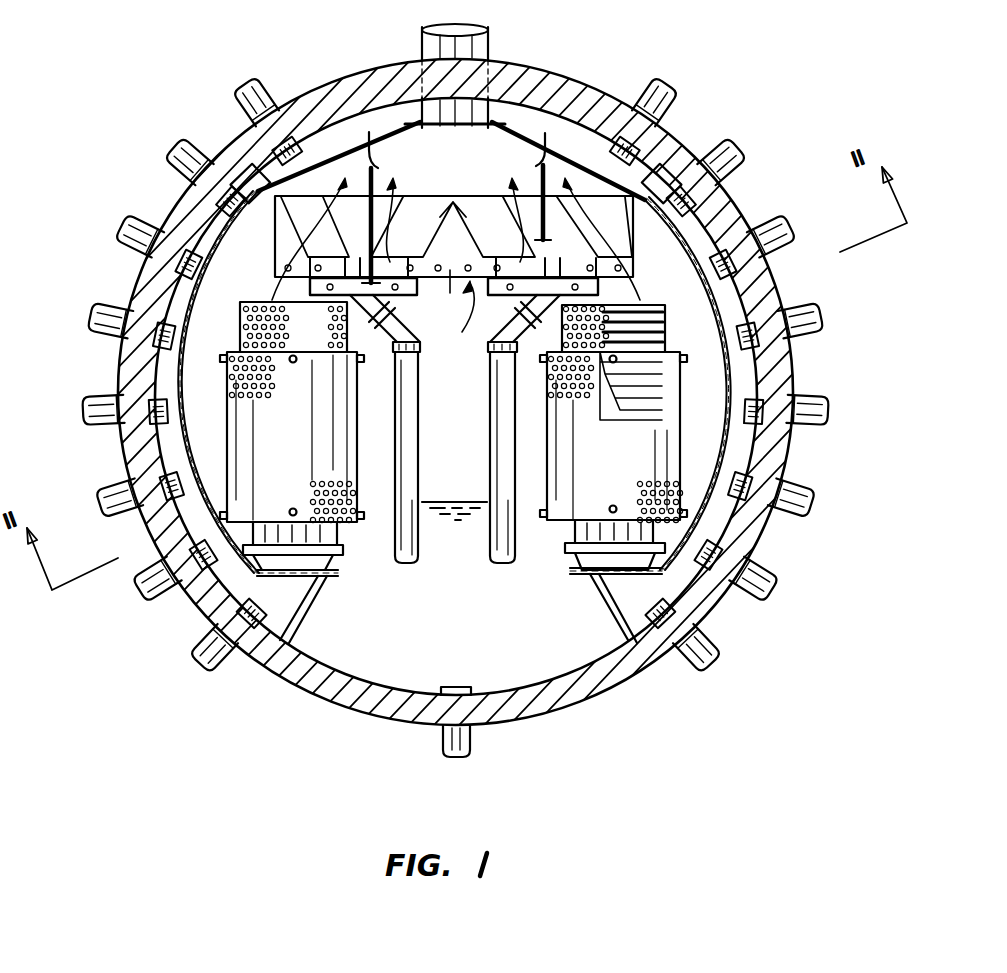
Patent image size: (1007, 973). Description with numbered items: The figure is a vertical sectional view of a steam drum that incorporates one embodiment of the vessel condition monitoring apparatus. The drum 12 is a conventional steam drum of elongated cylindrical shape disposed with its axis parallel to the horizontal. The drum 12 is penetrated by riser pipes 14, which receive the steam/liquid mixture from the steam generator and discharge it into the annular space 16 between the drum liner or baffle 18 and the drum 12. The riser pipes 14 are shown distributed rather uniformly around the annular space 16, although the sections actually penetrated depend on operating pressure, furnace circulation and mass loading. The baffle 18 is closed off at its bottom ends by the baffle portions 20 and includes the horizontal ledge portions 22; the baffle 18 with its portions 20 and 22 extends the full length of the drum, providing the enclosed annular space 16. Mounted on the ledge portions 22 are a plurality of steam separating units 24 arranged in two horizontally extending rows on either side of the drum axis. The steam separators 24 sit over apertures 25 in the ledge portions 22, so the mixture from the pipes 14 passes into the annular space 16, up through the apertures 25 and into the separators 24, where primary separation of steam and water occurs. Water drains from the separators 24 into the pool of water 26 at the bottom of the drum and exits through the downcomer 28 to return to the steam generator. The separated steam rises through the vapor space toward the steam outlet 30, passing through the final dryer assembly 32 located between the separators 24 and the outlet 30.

The drum 12 is at (733, 201).
The riser pipes 14 is at (657, 110).
The annular space 16 is at (212, 250).
The baffle 18 is at (620, 262).
The baffle portions 20 is at (303, 618).
The horizontal ledge portions 22 is at (335, 565).
The steam separating units 24 is at (298, 441).
The apertures 25 is at (300, 578).
The pool of water 26 is at (462, 500).
The downcomer 28 is at (484, 722).
The steam outlet 30 is at (488, 41).
The final dryer assembly 32 is at (454, 306).